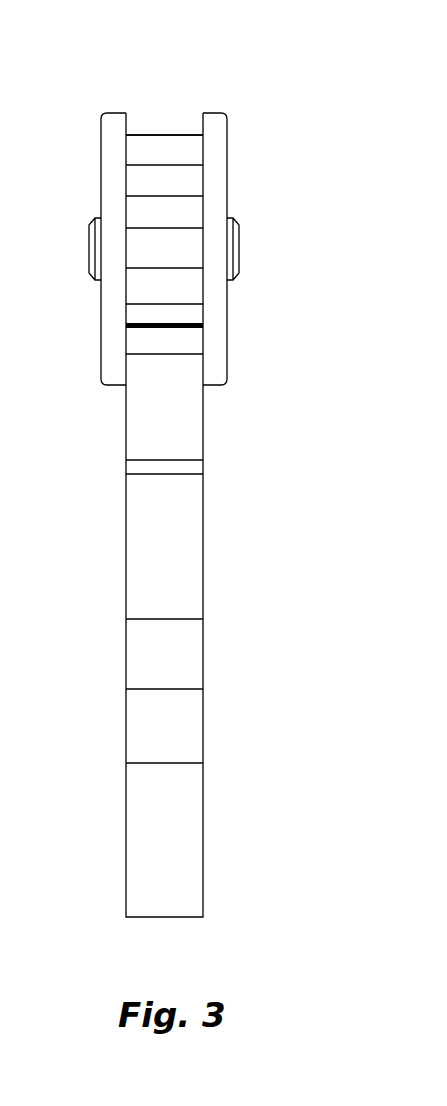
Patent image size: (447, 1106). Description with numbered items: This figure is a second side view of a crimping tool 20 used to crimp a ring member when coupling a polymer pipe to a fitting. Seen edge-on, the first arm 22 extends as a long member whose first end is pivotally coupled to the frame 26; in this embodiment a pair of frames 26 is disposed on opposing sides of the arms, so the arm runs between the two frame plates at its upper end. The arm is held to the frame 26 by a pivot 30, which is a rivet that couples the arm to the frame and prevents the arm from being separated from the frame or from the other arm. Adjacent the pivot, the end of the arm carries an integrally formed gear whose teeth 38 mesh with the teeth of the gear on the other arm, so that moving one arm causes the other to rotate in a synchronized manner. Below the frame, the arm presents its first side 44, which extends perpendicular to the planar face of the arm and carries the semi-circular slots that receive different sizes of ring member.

The crimping tool 20 is at (79, 100).
The first arm 22 is at (143, 562).
The frame 26 is at (101, 165).
The pivot 30 is at (89, 255).
The teeth 38 is at (172, 122).
The first side 44 is at (184, 607).